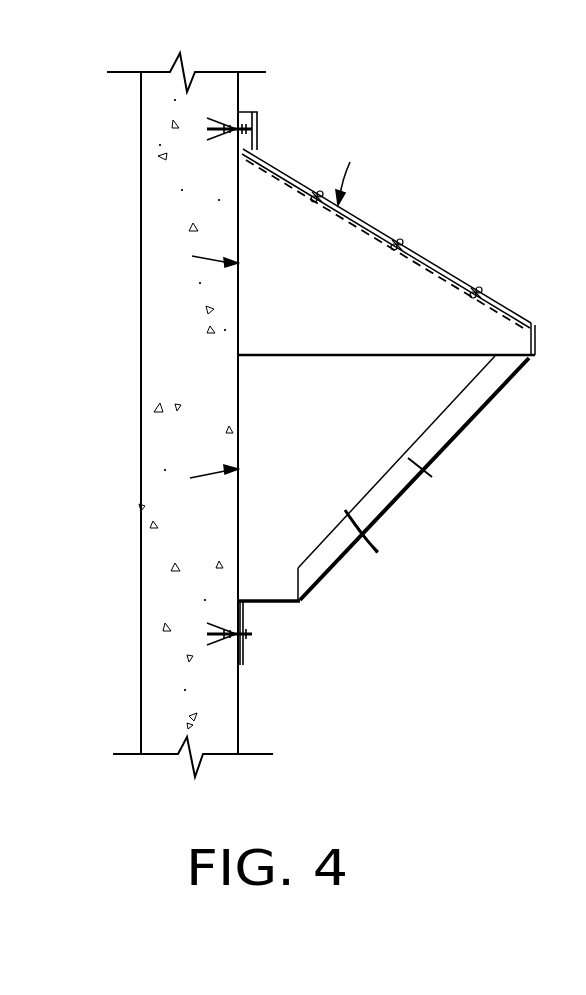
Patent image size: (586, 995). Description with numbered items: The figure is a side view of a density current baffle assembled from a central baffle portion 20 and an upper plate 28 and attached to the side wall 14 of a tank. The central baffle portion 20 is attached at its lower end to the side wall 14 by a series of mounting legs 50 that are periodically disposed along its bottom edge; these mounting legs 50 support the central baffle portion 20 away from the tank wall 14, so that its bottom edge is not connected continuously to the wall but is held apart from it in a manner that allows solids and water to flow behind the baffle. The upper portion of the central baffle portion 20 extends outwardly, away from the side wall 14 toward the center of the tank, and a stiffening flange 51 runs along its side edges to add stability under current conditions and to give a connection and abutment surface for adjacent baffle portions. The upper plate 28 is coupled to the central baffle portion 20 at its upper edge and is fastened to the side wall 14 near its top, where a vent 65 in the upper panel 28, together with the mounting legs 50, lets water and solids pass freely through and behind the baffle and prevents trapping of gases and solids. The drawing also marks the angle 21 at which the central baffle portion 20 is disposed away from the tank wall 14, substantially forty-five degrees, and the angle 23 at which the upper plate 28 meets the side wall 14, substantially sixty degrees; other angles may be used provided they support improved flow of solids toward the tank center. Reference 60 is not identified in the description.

The side wall 14 is at (153, 313).
The vent 65 is at (257, 113).
The upper plate 28 is at (355, 212).
The fasteners 60 is at (412, 292).
The angle 23 is at (308, 268).
The angle 21 is at (300, 458).
The central baffle portion 20 is at (478, 413).
The stiffening flange 51 is at (419, 470).
The mounting legs 50 is at (265, 603).